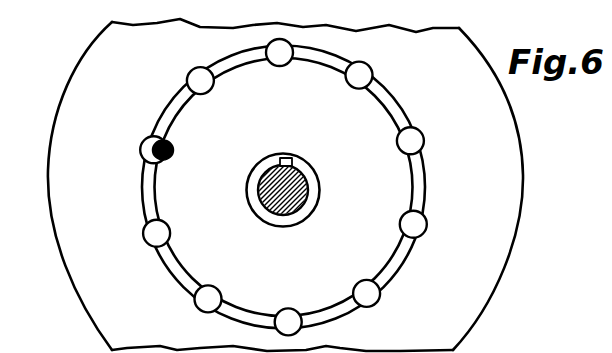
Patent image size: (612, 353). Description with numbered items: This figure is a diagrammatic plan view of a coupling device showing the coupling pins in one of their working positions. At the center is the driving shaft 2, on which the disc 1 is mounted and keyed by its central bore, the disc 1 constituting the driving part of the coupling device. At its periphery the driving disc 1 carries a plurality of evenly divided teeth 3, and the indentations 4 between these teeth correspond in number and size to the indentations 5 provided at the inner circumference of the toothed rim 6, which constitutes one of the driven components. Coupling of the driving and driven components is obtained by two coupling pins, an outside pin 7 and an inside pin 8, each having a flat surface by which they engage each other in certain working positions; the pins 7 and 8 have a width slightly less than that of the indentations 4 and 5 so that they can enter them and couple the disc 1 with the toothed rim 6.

The disc 1 is at (163, 193).
The driving shaft 2 is at (307, 183).
The teeth 3 is at (388, 124).
The indentations 4 is at (170, 231).
The indentations 5 is at (192, 301).
The toothed rim 6 is at (48, 165).
The outside pin 7 is at (141, 152).
The inside pin 8 is at (173, 148).